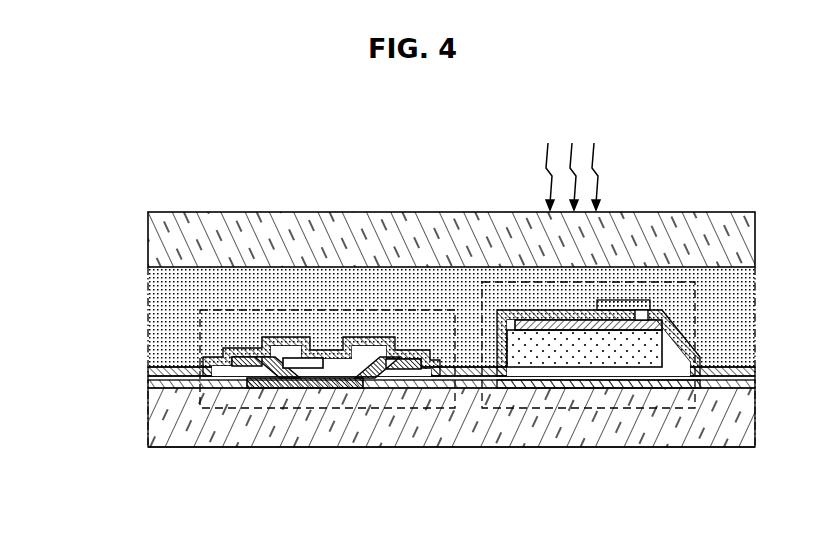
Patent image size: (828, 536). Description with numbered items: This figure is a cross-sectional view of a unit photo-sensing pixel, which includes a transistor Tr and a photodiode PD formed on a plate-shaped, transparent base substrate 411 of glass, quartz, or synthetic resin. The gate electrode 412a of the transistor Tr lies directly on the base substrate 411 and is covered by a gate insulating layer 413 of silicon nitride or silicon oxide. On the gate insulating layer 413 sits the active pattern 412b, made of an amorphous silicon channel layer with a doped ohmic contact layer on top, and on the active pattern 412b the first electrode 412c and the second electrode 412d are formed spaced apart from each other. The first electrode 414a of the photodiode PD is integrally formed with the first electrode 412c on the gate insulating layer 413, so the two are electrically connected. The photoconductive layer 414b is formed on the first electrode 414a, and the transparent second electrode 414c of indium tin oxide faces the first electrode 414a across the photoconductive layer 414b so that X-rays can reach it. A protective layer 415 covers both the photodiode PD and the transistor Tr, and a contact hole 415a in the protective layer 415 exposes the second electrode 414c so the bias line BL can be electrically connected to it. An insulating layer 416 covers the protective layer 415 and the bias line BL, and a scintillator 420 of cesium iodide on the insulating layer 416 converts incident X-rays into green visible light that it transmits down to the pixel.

The base substrate 411 is at (153, 424).
The gate insulating layer 413 is at (155, 380).
The protective layer 415 is at (155, 367).
The contact hole 415a is at (655, 305).
The insulating layer 416 is at (157, 295).
The scintillator 420 is at (155, 235).
The gate electrode 412a is at (336, 388).
The active pattern 412b is at (266, 380).
The first electrode 412c is at (430, 376).
The second electrode 412d is at (228, 376).
The first electrode 414a is at (601, 378).
The photoconductive layer 414b is at (640, 355).
The second electrode 414c is at (535, 331).
The transistor Tr is at (336, 310).
The photodiode PD is at (512, 283).
The bias line BL is at (645, 310).